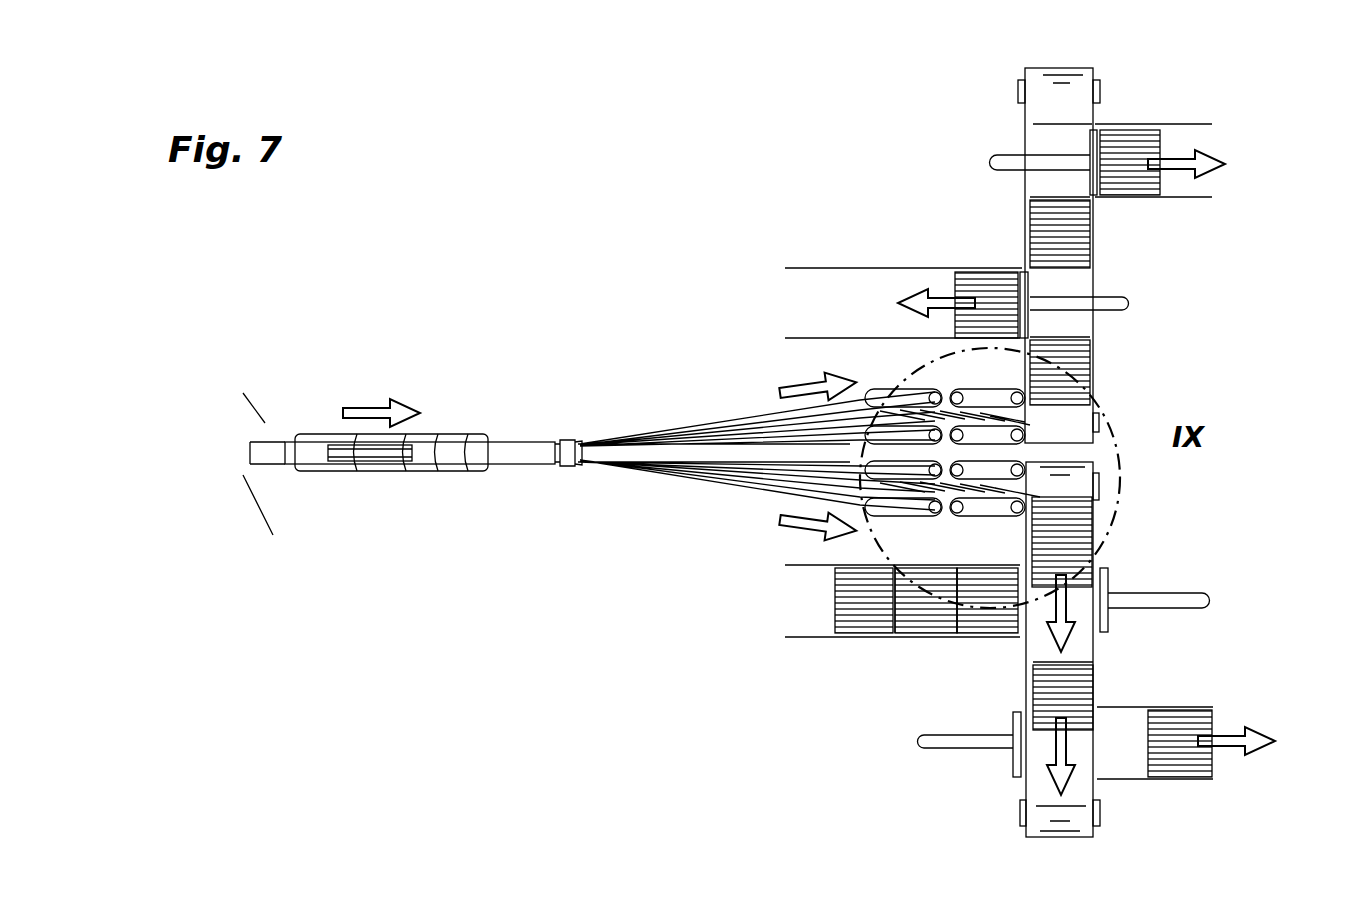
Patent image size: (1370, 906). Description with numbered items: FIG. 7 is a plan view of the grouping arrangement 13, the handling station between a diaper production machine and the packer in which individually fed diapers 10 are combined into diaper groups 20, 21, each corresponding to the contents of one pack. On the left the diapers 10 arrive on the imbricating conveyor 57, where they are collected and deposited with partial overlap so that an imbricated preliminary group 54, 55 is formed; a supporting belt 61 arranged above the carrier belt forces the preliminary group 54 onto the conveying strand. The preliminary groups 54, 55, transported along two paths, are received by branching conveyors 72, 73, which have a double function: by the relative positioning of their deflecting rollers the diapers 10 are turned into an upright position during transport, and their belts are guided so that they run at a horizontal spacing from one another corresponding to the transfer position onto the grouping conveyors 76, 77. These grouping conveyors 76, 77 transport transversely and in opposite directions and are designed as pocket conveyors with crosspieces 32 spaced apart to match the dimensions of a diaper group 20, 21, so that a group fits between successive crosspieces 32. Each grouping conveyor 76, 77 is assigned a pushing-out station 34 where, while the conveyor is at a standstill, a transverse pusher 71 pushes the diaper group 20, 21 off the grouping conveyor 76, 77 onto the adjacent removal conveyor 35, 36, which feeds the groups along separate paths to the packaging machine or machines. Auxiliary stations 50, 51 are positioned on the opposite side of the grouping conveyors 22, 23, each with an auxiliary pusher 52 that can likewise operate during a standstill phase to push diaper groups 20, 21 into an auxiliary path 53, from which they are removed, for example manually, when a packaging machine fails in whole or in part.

The diapers 10 is at (475, 435).
The grouping arrangement 13 is at (1219, 392).
The diaper group 20 is at (1128, 148).
The diaper group 21 is at (1057, 550).
The grouping conveyor 22 is at (1100, 56).
The grouping conveyor 23 is at (960, 649).
The crosspieces 32 is at (1100, 425).
The pushing-out station 34 is at (1258, 78).
The removal conveyor 35 is at (1205, 123).
The removal conveyor 36 is at (1125, 708).
The auxiliary station 50 is at (987, 215).
The auxiliary station 51 is at (937, 650).
The auxiliary pusher 52 is at (1110, 300).
The auxiliary path 53 is at (810, 268).
The preliminary group 54 is at (435, 483).
The preliminary group 55 is at (409, 513).
The imbricating conveyor 57 is at (520, 486).
The supporting belt 61 is at (530, 438).
The transverse pusher 71 is at (1045, 162).
The branching conveyor 72 is at (688, 410).
The branching conveyor 73 is at (697, 500).
The grouping conveyor 76 is at (1108, 241).
The grouping conveyor 77 is at (988, 676).